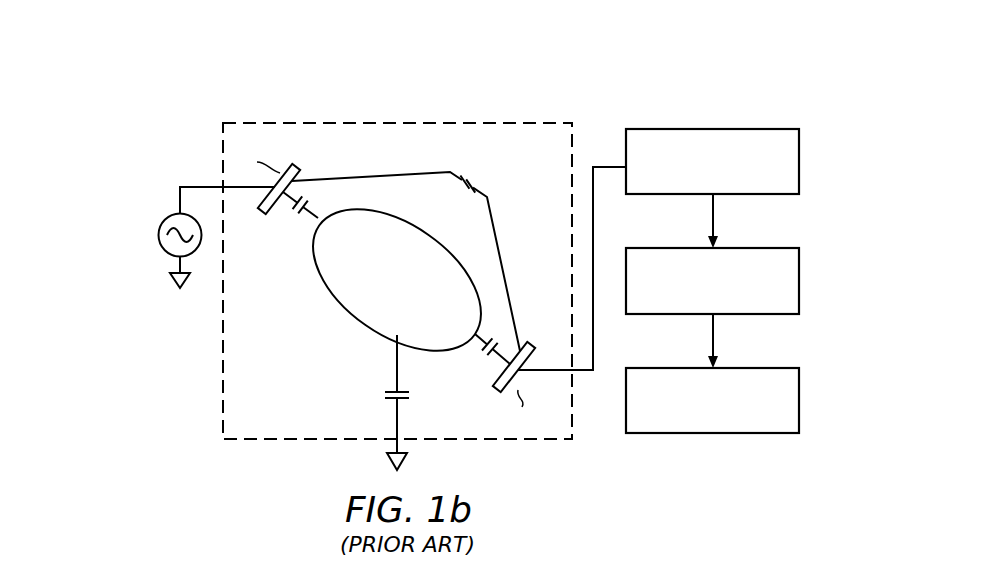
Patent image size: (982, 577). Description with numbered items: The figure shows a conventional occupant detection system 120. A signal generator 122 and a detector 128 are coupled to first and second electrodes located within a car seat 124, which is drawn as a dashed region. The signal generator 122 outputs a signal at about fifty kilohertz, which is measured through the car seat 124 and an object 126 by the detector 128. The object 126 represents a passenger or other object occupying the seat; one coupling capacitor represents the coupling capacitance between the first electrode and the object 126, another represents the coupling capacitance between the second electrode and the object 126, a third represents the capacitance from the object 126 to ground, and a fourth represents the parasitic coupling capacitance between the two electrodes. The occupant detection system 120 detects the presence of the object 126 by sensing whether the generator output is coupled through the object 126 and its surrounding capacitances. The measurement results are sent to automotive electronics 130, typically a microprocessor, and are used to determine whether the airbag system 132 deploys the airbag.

The occupant detection system 120 is at (738, 77).
The signal generator 122 is at (158, 232).
The car seat 124 is at (263, 122).
The object 126 is at (333, 293).
The detector 128 is at (802, 160).
The automotive electronics 130 is at (802, 282).
The airbag system 132 is at (802, 405).